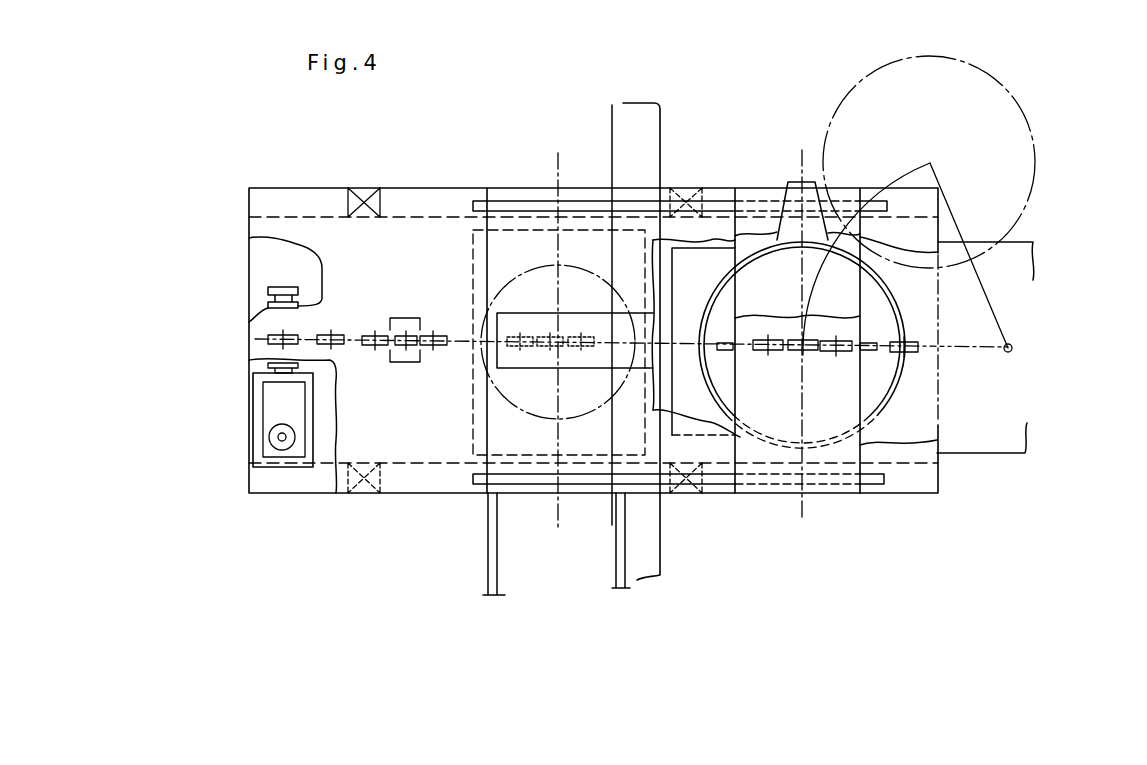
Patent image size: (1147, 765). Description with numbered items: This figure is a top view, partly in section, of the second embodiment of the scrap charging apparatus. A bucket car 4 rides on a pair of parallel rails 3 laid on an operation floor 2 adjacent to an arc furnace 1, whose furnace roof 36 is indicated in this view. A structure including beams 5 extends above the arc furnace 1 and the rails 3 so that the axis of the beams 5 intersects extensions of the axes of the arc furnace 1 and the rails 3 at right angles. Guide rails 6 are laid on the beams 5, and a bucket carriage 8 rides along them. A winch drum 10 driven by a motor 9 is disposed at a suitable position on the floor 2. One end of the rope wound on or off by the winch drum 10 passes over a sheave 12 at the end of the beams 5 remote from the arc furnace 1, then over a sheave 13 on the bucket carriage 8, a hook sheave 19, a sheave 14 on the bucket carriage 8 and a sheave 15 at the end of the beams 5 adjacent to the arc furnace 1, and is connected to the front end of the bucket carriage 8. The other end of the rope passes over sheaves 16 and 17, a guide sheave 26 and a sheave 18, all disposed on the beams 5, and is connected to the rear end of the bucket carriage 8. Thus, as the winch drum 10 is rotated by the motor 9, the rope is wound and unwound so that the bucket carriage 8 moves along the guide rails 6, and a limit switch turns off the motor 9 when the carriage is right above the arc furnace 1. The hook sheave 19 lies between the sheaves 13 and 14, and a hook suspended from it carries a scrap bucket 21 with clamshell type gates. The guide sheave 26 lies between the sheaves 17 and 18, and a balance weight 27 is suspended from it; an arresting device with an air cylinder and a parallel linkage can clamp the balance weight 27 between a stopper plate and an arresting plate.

The arc furnace 1 is at (907, 307).
The operation floor 2 is at (660, 553).
The rails 3 is at (488, 555).
The bucket car 4 is at (475, 440).
The beams 5 is at (508, 200).
The guide rails 6 is at (600, 202).
The bucket carriage 8 is at (617, 414).
The motor 9 is at (270, 432).
The winch drum 10 is at (268, 305).
The sheave 12 is at (268, 338).
The sheave 13 is at (770, 352).
The sheave 14 is at (840, 352).
The sheave 15 is at (912, 353).
The sheave 16 is at (331, 330).
The sheave 17 is at (373, 330).
The sheave 18 is at (440, 331).
The hook sheave 19 is at (790, 343).
The scrap bucket 21 is at (497, 298).
The guide sheave 26 is at (406, 316).
The balance weight 27 is at (405, 363).
The furnace roof 36 is at (1015, 125).